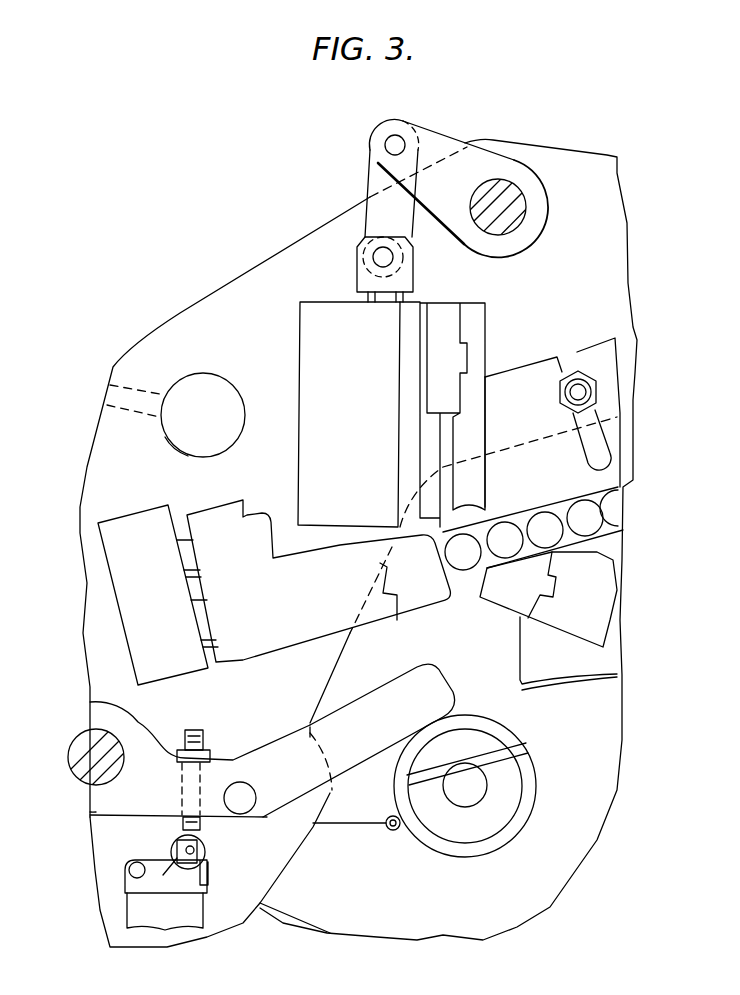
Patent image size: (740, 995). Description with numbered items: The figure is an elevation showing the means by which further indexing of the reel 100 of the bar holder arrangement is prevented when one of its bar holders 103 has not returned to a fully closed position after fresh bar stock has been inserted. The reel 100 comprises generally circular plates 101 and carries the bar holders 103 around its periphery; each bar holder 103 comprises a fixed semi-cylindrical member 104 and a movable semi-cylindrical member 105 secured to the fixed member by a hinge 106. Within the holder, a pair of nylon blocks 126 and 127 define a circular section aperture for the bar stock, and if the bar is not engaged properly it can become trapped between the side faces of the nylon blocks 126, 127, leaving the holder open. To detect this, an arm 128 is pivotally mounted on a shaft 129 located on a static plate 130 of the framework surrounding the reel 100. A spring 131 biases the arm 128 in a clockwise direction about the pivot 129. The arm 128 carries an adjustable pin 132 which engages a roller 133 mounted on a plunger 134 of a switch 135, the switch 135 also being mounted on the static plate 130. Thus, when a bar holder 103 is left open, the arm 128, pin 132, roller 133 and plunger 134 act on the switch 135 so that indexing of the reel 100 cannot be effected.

The reel 100 is at (396, 922).
The circular plate 101 is at (290, 864).
The bar holder 103 is at (503, 807).
The fixed semi-cylindrical member 104 is at (480, 847).
The movable semi-cylindrical member 105 is at (510, 695).
The hinge 106 is at (392, 831).
The nylon block 126 is at (472, 761).
The nylon block 127 is at (477, 834).
The arm 128 is at (390, 708).
The shaft 129 is at (113, 745).
The static plate 130 is at (207, 819).
The spring 131 is at (210, 817).
The adjustable pin 132 is at (203, 747).
The roller 133 is at (177, 845).
The plunger 134 is at (208, 878).
The switch 135 is at (183, 908).